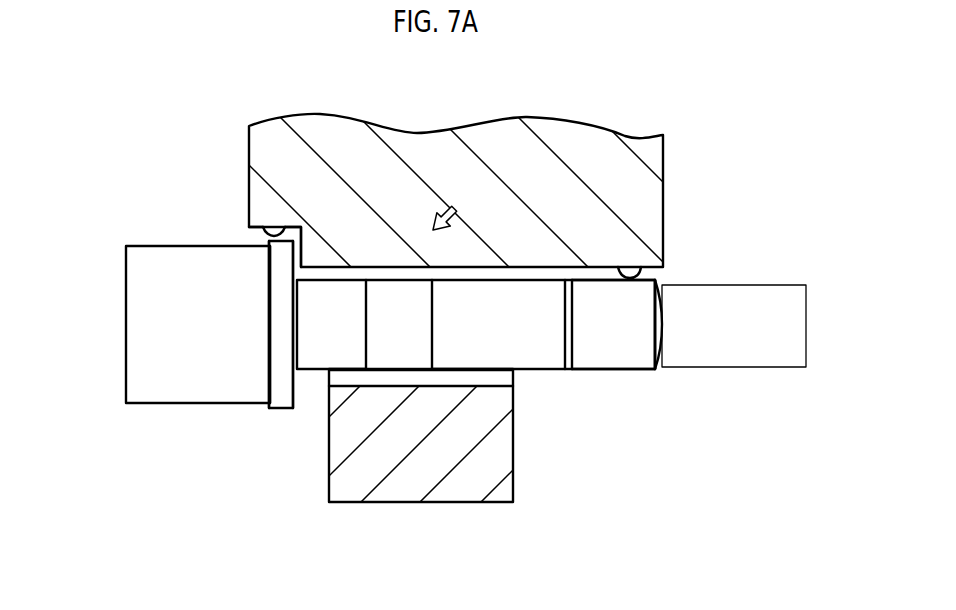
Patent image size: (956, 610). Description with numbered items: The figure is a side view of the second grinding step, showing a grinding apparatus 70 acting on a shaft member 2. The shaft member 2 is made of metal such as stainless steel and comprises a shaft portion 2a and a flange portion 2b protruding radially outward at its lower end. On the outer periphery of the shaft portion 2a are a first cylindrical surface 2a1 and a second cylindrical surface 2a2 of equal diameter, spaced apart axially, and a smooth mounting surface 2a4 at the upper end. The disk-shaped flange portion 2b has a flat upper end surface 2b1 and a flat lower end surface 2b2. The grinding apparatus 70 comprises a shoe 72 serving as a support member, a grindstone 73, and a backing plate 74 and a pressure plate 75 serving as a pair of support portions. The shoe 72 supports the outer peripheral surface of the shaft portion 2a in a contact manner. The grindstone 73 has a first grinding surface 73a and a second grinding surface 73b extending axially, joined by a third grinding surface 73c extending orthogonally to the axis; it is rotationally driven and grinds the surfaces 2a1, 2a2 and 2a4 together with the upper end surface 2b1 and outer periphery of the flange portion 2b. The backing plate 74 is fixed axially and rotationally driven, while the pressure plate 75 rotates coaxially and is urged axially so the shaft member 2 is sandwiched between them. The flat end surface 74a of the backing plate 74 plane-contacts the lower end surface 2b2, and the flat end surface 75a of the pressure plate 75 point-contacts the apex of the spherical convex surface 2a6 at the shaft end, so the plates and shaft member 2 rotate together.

The grinding apparatus 70 is at (166, 189).
The grindstone 73 is at (641, 190).
The first grinding surface 73a is at (641, 267).
The second grinding surface 73b is at (258, 233).
The third grinding surface 73c is at (297, 232).
The backing plate 74 is at (157, 383).
The end surface of the backing plate 74a is at (271, 353).
The flange portion 2b is at (278, 283).
The upper end surface 2b1 is at (296, 385).
The lower end surface 2b2 is at (268, 338).
The shaft member 2 is at (527, 418).
The shaft portion 2a is at (529, 350).
The first cylindrical surface 2a1 is at (483, 370).
The second cylindrical surface 2a2 is at (352, 370).
The mounting surface 2a4 is at (607, 375).
The spherical convex surface 2a6 is at (663, 343).
The pressure plate 75 is at (773, 300).
The end surface of the pressure plate 75a is at (653, 332).
The shoe 72 is at (417, 482).